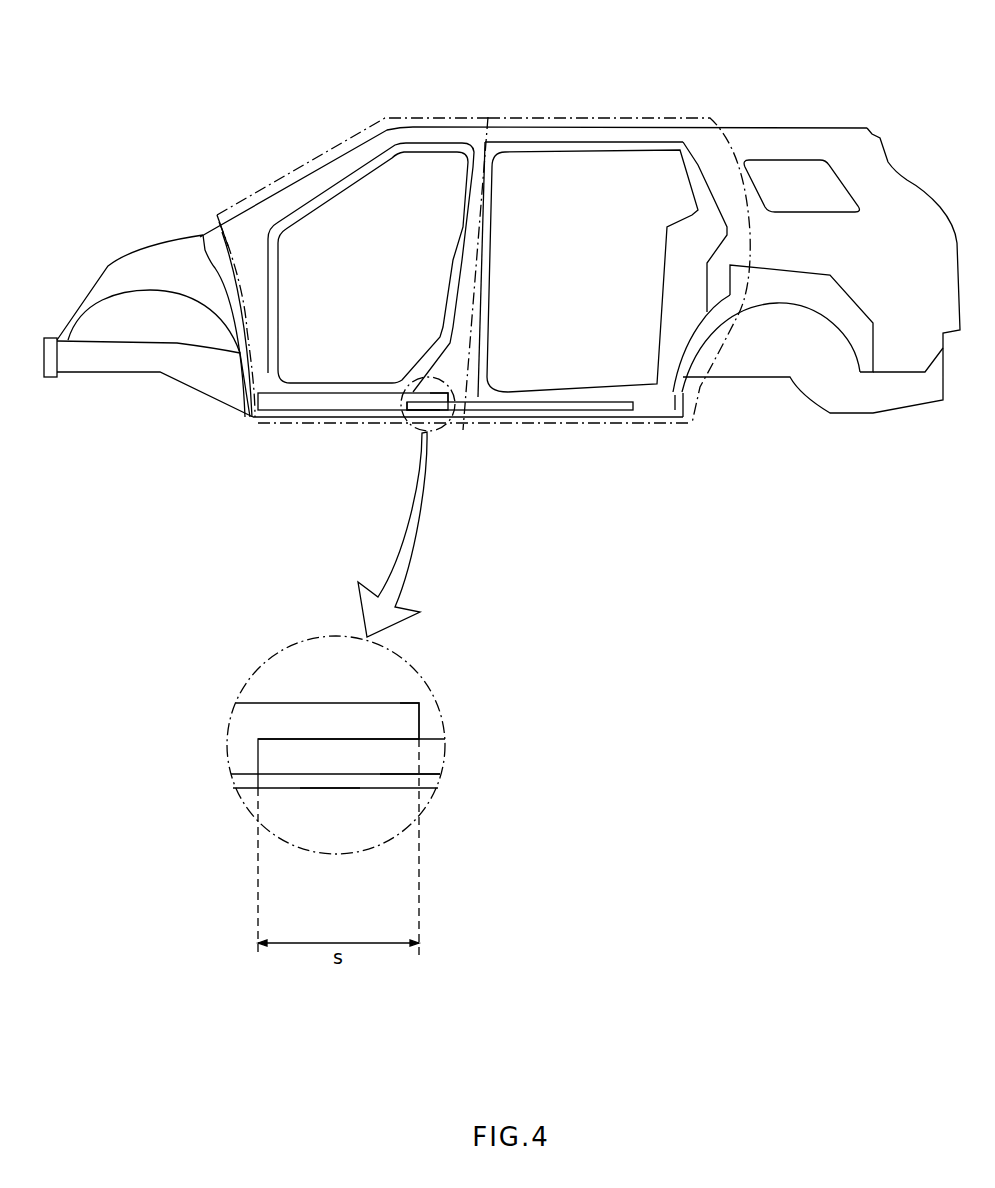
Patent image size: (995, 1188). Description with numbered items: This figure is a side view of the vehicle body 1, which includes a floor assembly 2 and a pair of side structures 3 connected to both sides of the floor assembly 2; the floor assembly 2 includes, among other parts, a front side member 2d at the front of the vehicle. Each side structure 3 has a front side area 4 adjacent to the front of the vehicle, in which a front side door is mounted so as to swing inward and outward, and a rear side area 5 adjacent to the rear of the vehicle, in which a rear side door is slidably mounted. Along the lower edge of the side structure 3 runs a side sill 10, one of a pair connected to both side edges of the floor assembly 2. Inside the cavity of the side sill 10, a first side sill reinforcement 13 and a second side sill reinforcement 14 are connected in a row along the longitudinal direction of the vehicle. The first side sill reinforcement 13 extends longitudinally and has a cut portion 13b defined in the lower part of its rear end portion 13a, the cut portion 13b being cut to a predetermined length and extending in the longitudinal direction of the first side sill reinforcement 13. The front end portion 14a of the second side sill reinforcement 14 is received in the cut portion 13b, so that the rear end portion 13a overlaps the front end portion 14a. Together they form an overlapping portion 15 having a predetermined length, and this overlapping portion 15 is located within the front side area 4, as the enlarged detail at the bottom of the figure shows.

The vehicle body 1 is at (234, 61).
The floor assembly 2 is at (563, 378).
The front side member 2d is at (113, 358).
The side structure 3 is at (596, 108).
The front side area 4 is at (427, 117).
The rear side area 5 is at (661, 117).
The side sill 10 is at (589, 421).
The first side sill reinforcement 13 is at (345, 419).
The rear end portion of the first side sill reinforcement 13a is at (425, 385).
The cut portion 13b is at (405, 752).
The second side sill reinforcement 14 is at (547, 413).
The front end portion of the second side sill reinforcement 14a is at (432, 417).
The overlapping portion 15 is at (327, 786).